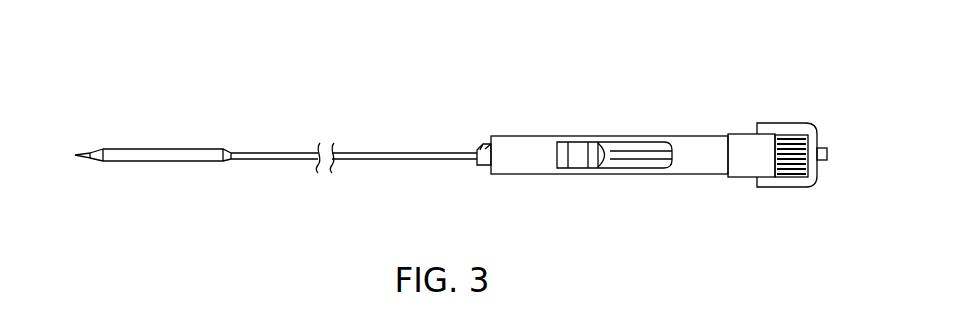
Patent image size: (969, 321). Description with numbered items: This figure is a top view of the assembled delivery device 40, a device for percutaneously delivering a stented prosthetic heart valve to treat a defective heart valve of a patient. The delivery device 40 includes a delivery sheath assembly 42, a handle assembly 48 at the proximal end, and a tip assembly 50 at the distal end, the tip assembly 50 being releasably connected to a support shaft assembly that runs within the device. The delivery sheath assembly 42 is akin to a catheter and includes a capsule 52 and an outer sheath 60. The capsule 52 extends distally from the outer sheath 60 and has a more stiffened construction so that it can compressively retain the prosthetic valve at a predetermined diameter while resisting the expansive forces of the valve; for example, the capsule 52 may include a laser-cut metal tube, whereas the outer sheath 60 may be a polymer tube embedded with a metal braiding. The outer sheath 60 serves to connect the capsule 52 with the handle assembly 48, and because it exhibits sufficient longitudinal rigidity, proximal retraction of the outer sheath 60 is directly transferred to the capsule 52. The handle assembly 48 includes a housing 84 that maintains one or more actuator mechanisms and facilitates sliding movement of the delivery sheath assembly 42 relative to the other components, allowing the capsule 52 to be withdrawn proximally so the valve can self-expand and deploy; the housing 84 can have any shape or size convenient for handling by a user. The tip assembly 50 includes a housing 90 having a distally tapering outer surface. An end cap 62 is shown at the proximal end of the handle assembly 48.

The delivery device 40 is at (655, 63).
The delivery sheath assembly 42 is at (176, 147).
The handle assembly 48 is at (645, 127).
The tip assembly 50 is at (96, 162).
The capsule 52 is at (166, 162).
The outer sheath 60 is at (380, 152).
The end cap 62 is at (817, 107).
The housing 84 is at (670, 176).
The housing 90 is at (82, 152).